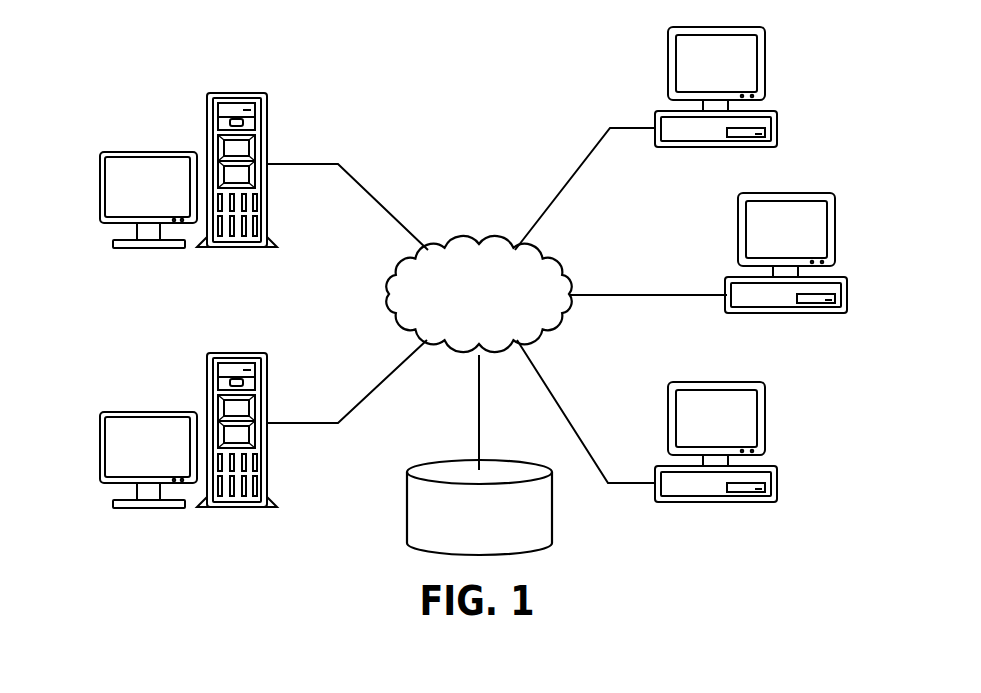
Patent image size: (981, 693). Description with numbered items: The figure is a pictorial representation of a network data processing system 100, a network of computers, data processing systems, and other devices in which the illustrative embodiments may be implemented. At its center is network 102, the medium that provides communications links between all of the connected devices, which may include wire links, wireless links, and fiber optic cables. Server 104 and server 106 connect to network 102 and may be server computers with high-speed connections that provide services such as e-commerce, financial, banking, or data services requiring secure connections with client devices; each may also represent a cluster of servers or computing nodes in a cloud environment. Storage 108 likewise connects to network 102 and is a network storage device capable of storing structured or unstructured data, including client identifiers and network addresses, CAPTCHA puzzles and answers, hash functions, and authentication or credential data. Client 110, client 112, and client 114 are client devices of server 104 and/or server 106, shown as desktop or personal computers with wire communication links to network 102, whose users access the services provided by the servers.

The network data processing system 100 is at (340, 68).
The network 102 is at (452, 240).
The server 104 is at (100, 188).
The server 106 is at (100, 447).
The storage 108 is at (407, 508).
The client 110 is at (777, 119).
The client 112 is at (847, 302).
The client 114 is at (777, 491).